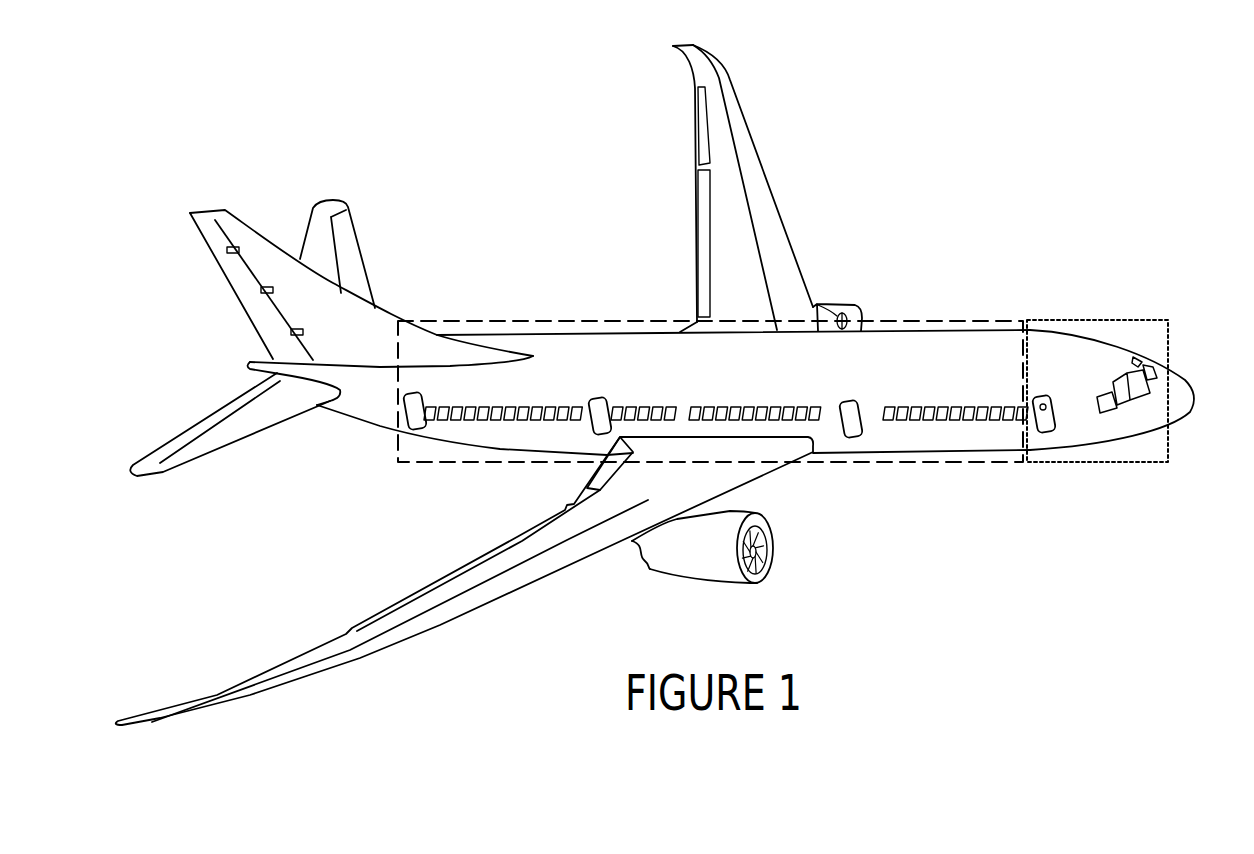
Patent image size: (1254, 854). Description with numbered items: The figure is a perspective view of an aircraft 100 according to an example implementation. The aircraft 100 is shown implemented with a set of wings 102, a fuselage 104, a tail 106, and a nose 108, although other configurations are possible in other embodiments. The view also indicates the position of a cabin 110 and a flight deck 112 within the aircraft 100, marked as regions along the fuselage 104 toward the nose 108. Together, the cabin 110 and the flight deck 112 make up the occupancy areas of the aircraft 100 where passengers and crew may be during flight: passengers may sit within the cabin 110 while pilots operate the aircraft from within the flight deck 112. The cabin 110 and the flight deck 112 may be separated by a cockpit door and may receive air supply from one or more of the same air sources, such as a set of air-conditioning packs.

The aircraft 100 is at (958, 180).
The set of wings 102 is at (742, 117).
The fuselage 104 is at (545, 334).
The tail 106 is at (237, 227).
The nose 108 is at (1188, 408).
The cabin 110 is at (950, 321).
The flight deck 112 is at (1110, 321).